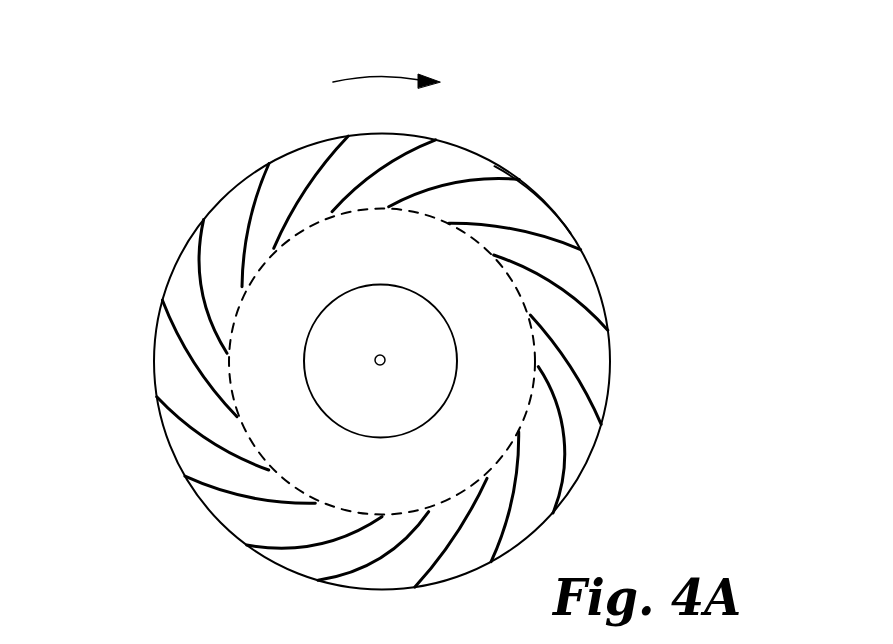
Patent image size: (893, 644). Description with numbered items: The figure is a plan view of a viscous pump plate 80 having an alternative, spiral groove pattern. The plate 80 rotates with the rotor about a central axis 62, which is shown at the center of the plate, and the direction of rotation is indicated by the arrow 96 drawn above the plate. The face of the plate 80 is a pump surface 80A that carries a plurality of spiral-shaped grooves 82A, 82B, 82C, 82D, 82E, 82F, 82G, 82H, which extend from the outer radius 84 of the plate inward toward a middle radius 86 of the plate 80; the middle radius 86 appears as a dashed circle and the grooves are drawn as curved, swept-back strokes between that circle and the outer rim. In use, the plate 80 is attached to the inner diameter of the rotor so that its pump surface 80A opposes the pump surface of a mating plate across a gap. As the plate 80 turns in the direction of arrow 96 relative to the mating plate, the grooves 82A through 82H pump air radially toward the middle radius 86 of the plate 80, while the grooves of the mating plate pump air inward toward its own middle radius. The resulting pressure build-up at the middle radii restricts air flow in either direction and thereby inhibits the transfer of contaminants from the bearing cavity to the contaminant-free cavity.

The plate 80 is at (622, 209).
The pump surface 80A is at (533, 195).
The outer radius 84 is at (609, 314).
The middle radius 86 is at (517, 283).
The central axis 62 is at (374, 361).
The spiral-shaped groove 82A is at (558, 262).
The spiral-shaped groove 82B is at (457, 148).
The spiral-shaped groove 82C is at (295, 158).
The spiral-shaped groove 82D is at (186, 288).
The spiral-shaped groove 82E is at (181, 447).
The spiral-shaped groove 82F is at (290, 563).
The spiral-shaped groove 82G is at (462, 567).
The spiral-shaped groove 82H is at (593, 451).
The arrow 96 is at (382, 73).